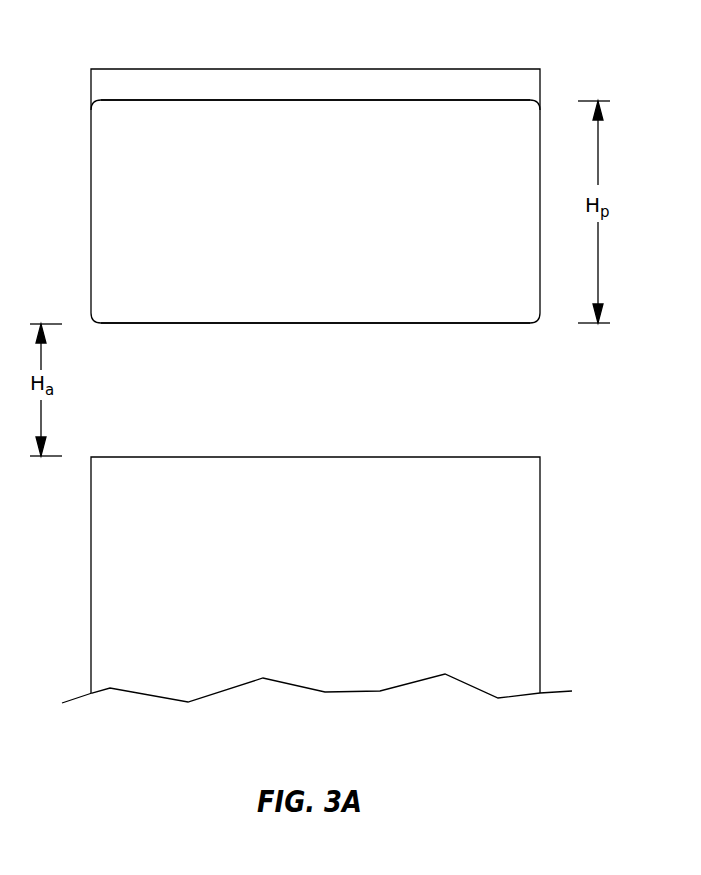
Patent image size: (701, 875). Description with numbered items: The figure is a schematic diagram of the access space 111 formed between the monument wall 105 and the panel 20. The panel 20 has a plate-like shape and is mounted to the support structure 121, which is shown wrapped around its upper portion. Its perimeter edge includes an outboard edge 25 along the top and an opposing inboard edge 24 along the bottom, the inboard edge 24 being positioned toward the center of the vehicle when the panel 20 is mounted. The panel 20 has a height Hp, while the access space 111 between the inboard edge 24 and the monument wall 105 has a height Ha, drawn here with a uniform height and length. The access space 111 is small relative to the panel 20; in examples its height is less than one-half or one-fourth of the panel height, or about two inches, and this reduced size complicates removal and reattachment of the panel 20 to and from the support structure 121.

The support structure 121 is at (253, 82).
The outboard edge 25 is at (388, 100).
The panel 20 is at (338, 216).
The inboard edge 24 is at (383, 323).
The access space 111 is at (341, 395).
The monument wall 105 is at (344, 585).